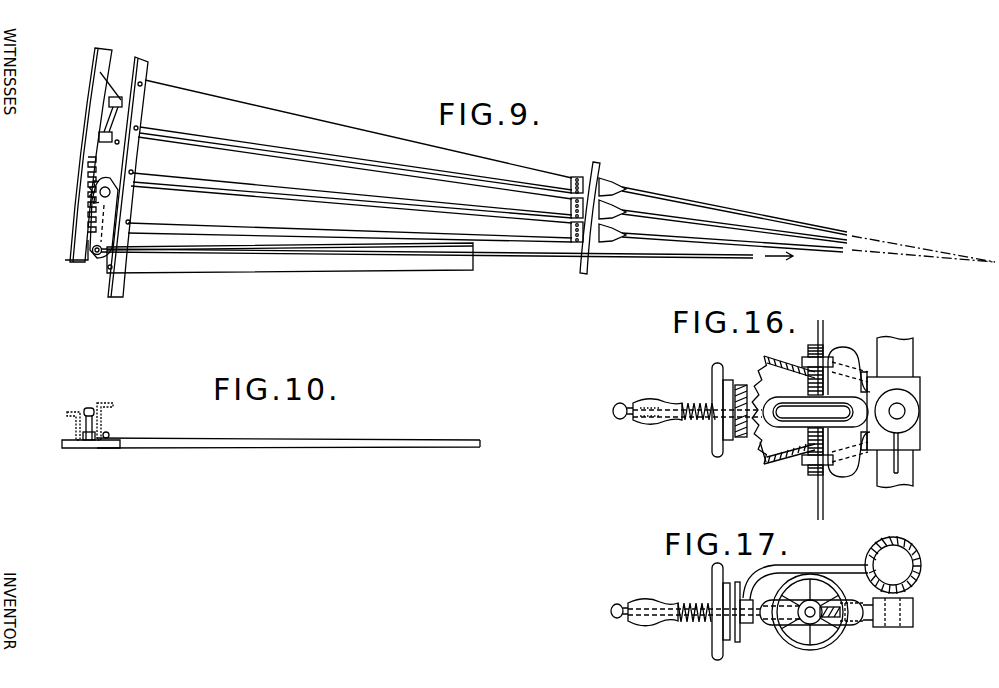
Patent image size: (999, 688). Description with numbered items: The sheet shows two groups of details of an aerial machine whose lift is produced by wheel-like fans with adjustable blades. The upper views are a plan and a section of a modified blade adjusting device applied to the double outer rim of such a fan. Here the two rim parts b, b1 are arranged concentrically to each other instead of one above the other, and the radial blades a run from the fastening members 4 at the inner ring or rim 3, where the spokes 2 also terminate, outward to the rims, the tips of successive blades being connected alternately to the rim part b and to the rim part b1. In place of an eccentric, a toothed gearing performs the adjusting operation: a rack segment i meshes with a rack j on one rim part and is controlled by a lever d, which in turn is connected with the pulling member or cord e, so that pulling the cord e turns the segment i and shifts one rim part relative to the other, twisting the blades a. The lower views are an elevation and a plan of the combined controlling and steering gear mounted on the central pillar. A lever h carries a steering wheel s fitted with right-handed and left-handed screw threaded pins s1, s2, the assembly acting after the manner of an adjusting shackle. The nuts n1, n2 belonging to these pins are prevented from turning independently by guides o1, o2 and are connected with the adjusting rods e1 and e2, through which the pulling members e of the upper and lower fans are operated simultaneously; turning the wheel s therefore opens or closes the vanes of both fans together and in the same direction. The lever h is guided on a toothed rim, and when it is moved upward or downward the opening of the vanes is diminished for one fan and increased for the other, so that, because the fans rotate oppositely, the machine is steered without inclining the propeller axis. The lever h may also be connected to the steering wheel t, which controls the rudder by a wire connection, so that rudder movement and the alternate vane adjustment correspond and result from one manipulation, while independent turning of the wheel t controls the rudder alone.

In FIG. 9, the blade a is at (487, 166).
In FIG. 10, the blade a is at (189, 444).
In FIG. 9, the rim part b is at (140, 70).
In FIG. 10, the rim part b is at (112, 404).
In FIG. 9, the rim part b1 is at (97, 93).
In FIG. 10, the rim part b1 is at (70, 412).
In FIG. 10, the fastening bolt c is at (87, 447).
In FIG. 9, the lever d is at (97, 236).
In FIG. 9, the pulling member or cord e is at (248, 249).
In FIG. 9, the rack segment i is at (95, 175).
In FIG. 9, the rack j is at (80, 168).
In FIG. 9, the spoke 2 is at (712, 223).
In FIG. 9, the inner ring or rim 3 is at (583, 272).
In FIG. 9, the fastening member 4 is at (600, 183).
In FIG. 16, the lever h is at (667, 421).
In FIG. 17, the lever h is at (648, 602).
In FIG. 16, the steering wheel t is at (713, 372).
In FIG. 17, the steering wheel t is at (713, 572).
In FIG. 16, the steering wheel s is at (792, 407).
In FIG. 17, the steering wheel s is at (845, 630).
In FIG. 16, the screw threaded pin s1 is at (808, 358).
In FIG. 17, the screw threaded pin s1 is at (811, 608).
In FIG. 16, the screw threaded pin s2 is at (798, 472).
In FIG. 16, the adjusting rod e1 is at (823, 328).
In FIG. 16, the adjusting rod e2 is at (818, 510).
In FIG. 16, the nut n1 is at (826, 361).
In FIG. 17, the nut n1 is at (812, 622).
In FIG. 16, the nut n2 is at (824, 463).
In FIG. 16, the guide o1 is at (845, 363).
In FIG. 16, the guide o2 is at (848, 458).